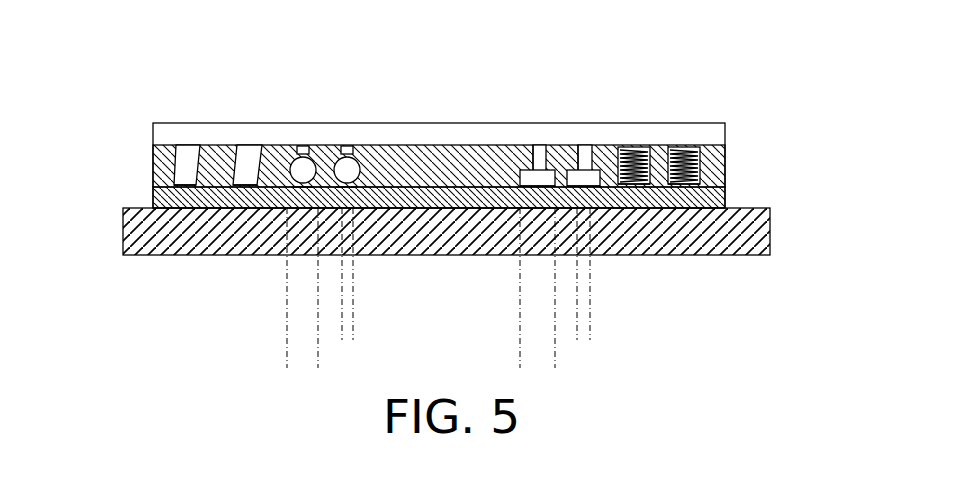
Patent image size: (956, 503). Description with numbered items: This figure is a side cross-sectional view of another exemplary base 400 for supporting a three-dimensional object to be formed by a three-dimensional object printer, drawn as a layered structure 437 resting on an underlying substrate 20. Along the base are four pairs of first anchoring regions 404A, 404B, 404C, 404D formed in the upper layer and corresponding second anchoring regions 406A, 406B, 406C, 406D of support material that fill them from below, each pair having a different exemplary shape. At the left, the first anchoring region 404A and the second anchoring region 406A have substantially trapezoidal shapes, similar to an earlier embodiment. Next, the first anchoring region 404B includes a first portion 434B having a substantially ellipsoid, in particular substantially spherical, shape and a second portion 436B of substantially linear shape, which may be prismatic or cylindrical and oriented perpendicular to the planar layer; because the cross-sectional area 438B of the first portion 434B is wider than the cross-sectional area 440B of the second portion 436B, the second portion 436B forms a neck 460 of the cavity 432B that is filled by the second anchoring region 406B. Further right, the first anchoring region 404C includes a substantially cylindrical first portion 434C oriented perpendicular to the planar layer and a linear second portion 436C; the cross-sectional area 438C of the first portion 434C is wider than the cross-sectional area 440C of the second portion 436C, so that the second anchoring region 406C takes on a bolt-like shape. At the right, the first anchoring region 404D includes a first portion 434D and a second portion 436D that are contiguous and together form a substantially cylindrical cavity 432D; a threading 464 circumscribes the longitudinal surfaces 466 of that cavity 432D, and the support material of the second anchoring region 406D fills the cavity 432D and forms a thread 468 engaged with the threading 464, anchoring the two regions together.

The base 400 is at (197, 52).
The substrate 20 is at (123, 232).
The encapsulation layer 437 is at (725, 135).
The first anchoring region 404A is at (260, 145).
The second anchoring region 406A is at (238, 185).
The first anchoring region 404B is at (355, 128).
The neck 460 is at (363, 145).
The second portion 436B is at (358, 158).
The second anchoring region 406B is at (289, 263).
The first portion 434B is at (289, 263).
The cavity 432B is at (345, 183).
The first anchoring region 404C is at (593, 147).
The second portion 436C is at (533, 158).
The first portion 434C is at (578, 158).
The second anchoring region 406C is at (583, 187).
The first anchoring region 404D is at (683, 129).
The threading 464 is at (683, 129).
The longitudinal surfaces 466 is at (707, 145).
The second anchoring region 406D is at (707, 238).
The first portion 434D is at (707, 238).
The second portion 436D is at (707, 238).
The thread 468 is at (707, 238).
The cavity 432D is at (684, 186).
The cross-sectional area 438B is at (258, 358).
The cross-sectional area 440B is at (305, 328).
The cross-sectional area 438C is at (485, 357).
The cross-sectional area 440C is at (542, 328).